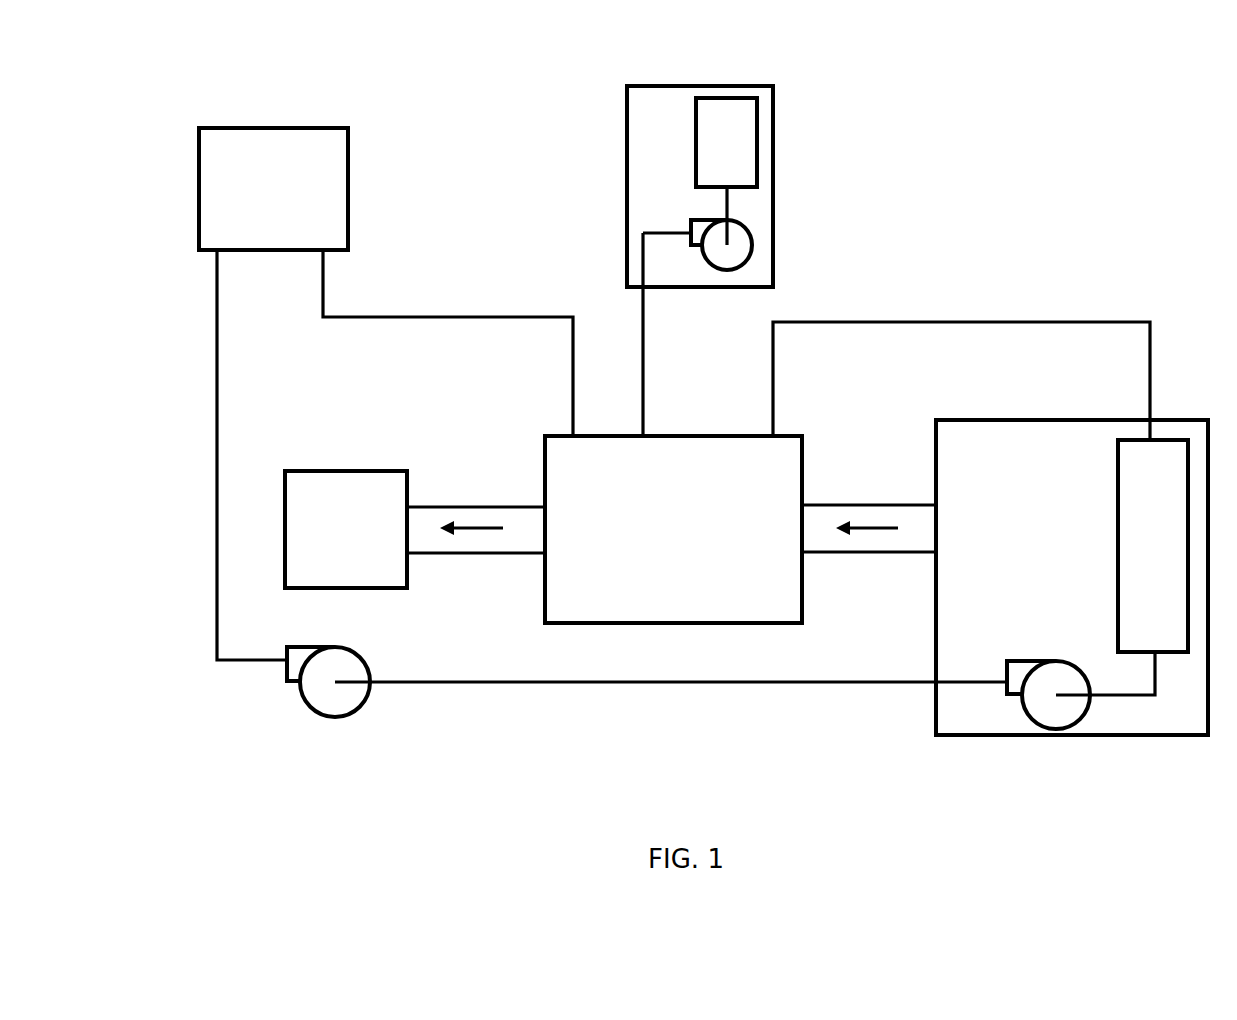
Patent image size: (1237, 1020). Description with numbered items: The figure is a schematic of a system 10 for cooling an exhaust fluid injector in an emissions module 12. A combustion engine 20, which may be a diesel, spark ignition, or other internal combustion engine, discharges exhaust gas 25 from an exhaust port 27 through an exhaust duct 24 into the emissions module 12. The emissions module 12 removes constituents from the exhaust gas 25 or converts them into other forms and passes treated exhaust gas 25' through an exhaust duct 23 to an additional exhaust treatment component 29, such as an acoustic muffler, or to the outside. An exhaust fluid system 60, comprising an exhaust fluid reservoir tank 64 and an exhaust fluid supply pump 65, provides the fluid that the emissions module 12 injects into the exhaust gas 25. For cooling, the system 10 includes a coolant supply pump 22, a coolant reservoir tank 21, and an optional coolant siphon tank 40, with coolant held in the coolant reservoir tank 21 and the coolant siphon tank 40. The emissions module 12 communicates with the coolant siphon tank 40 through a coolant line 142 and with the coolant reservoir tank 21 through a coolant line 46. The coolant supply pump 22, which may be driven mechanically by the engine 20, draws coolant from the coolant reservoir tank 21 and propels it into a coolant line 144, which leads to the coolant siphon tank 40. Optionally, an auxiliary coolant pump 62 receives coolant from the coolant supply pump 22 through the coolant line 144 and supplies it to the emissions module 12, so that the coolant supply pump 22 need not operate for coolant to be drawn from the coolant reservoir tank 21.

The system 10 is at (980, 158).
The emissions module 12 is at (673, 529).
The combustion engine 20 is at (1072, 577).
The coolant reservoir tank 21 is at (1153, 546).
The coolant supply pump 22 is at (1027, 717).
The exhaust duct 23 is at (481, 507).
The exhaust duct 24 is at (897, 505).
The exhaust gas 25 is at (867, 577).
The treated exhaust gas 25' is at (471, 577).
The exhaust port 27 is at (933, 527).
The additional exhaust treatment component 29 is at (346, 529).
The coolant siphon tank 40 is at (240, 128).
The coolant line 46 is at (1027, 322).
The exhaust fluid system 60 is at (670, 86).
The auxiliary coolant pump 62 is at (307, 706).
The exhaust fluid reservoir tank 64 is at (726, 142).
The exhaust fluid supply pump 65 is at (755, 241).
The coolant line 142 is at (452, 317).
The coolant line 144 is at (583, 682).